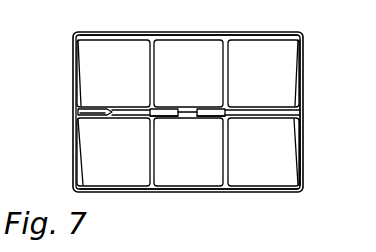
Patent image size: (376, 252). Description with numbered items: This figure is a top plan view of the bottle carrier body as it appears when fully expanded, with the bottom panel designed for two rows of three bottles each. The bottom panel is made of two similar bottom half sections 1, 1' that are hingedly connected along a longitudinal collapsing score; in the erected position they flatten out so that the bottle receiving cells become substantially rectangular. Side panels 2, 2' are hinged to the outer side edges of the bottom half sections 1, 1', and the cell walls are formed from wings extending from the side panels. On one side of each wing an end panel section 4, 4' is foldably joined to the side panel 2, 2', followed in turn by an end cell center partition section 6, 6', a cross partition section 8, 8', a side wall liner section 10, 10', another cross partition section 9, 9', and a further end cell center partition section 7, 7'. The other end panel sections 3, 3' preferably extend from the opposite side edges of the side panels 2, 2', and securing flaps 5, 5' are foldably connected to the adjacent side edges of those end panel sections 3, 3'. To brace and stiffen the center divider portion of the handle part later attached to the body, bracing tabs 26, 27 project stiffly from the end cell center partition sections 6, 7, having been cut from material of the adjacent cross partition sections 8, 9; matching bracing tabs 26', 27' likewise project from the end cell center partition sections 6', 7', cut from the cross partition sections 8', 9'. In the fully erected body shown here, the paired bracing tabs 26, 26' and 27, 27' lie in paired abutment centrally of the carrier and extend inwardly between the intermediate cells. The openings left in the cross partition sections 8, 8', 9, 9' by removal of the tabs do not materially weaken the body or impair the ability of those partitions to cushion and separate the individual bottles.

The bottom half section 1 is at (66, 73).
The side panel 2 is at (188, 95).
The end panel section 3 is at (171, 112).
The end panel section 4 is at (316, 112).
The securing flap 5 is at (76, 109).
The end cell center partition section 6 is at (262, 98).
The end cell center partition section 7 is at (131, 100).
The cross partition section 8 is at (263, 73).
The cross partition section 9 is at (113, 73).
The side wall liner section 10 is at (188, 73).
The bracing tab 26 is at (210, 98).
The bracing tab 27 is at (164, 98).
The bottom half section 1' is at (312, 152).
The side panel 2' is at (188, 205).
The end panel section 3' is at (65, 152).
The end panel section 4' is at (317, 152).
The securing flap 5' is at (77, 126).
The end cell center partition section 6' is at (262, 128).
The end cell center partition section 7' is at (131, 127).
The cross partition section 8' is at (263, 152).
The cross partition section 9' is at (113, 152).
The side wall liner section 10' is at (188, 152).
The bracing tab 26' is at (211, 132).
The bracing tab 27' is at (165, 132).